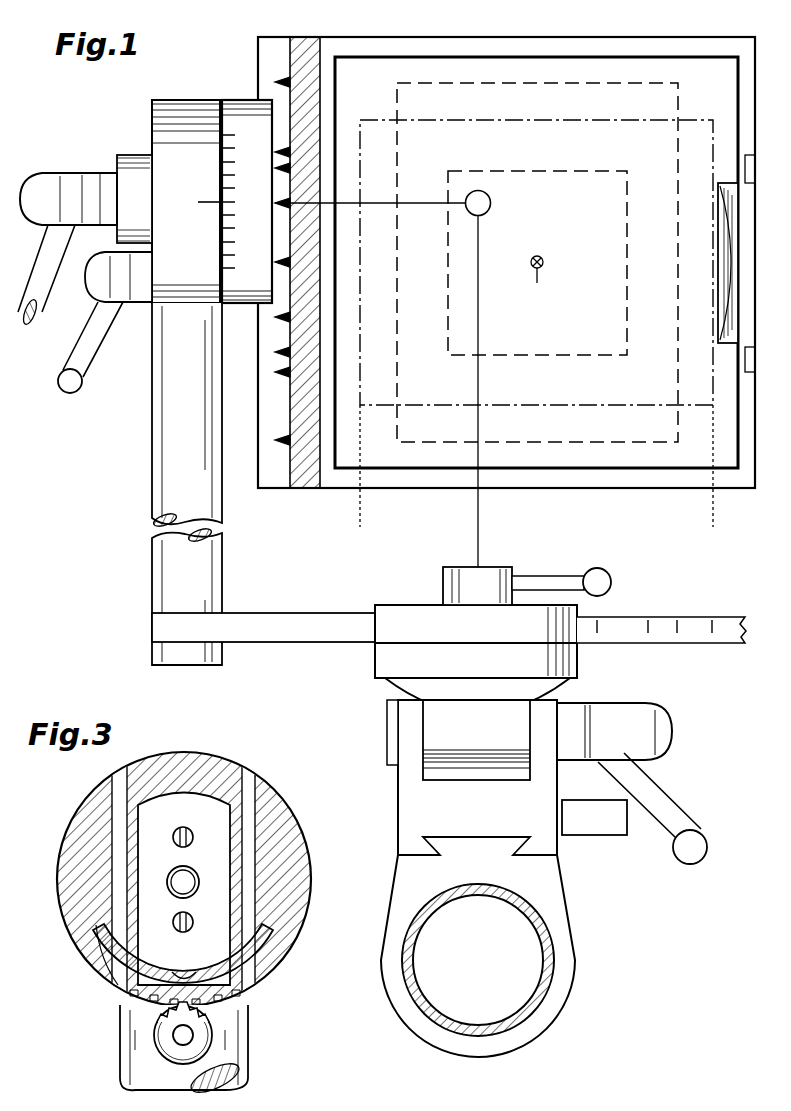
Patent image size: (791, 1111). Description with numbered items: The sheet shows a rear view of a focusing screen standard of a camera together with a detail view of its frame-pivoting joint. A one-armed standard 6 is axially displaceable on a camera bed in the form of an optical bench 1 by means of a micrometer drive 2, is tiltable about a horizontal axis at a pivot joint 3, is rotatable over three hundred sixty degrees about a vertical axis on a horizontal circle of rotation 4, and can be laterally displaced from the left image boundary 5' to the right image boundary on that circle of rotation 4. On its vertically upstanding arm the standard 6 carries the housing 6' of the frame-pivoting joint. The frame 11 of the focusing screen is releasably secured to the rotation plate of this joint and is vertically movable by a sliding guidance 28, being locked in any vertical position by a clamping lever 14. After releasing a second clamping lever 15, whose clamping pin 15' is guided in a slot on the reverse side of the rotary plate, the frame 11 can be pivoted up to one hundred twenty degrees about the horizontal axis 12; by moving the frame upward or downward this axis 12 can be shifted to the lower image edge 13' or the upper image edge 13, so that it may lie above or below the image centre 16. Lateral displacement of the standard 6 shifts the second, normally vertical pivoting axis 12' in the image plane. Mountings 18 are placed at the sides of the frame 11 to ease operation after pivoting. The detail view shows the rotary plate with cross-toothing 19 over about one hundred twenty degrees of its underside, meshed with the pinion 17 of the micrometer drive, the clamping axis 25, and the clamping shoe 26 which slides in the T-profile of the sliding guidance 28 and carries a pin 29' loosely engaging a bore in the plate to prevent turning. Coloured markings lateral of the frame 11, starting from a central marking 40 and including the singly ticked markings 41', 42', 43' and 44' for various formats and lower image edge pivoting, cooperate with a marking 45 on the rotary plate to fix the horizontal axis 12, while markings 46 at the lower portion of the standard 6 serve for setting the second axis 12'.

In FIG. 1, the optical bench 1 is at (550, 974).
In FIG. 1, the micrometer drive 2 is at (612, 825).
In FIG. 1, the pivot joint 3 is at (590, 699).
In FIG. 1, the horizontal circle of rotation 4 is at (441, 574).
In FIG. 1, the left image boundary 5' is at (519, 328).
In FIG. 1, the one-armed standard 6 is at (263, 484).
In FIG. 3, the one-armed standard 6 is at (154, 1051).
In FIG. 1, the housing of the frame-pivoting joint 6' is at (161, 201).
In FIG. 1, the frame 11 is at (676, 40).
In FIG. 1, the axis 12 is at (416, 199).
In FIG. 1, the second pivoting axis 12' is at (511, 391).
In FIG. 1, the upper image edge 13 is at (537, 262).
In FIG. 1, the lower image edge 13' is at (539, 307).
In FIG. 1, the clamping lever 14 is at (50, 190).
In FIG. 1, the second clamping lever 15 is at (89, 325).
In FIG. 3, the clamping pin 15' is at (244, 992).
In FIG. 1, the image centre 16 is at (539, 284).
In FIG. 3, the pinion 17 is at (215, 1035).
In FIG. 1, the mountings 18 is at (720, 272).
In FIG. 3, the cross-toothing 19 is at (105, 975).
In FIG. 3, the clamping axis 25 is at (171, 892).
In FIG. 3, the clamping shoe 26 is at (208, 812).
In FIG. 1, the sliding guidance 28 is at (281, 52).
In FIG. 3, the pin 29' is at (165, 825).
In FIG. 1, the central marking 40 is at (290, 262).
In FIG. 1, the marking 41' is at (338, 306).
In FIG. 1, the marking 42' is at (338, 337).
In FIG. 1, the marking 43' is at (338, 382).
In FIG. 1, the marking 44' is at (257, 424).
In FIG. 1, the marking 45 is at (270, 203).
In FIG. 1, the markings 46 is at (362, 620).